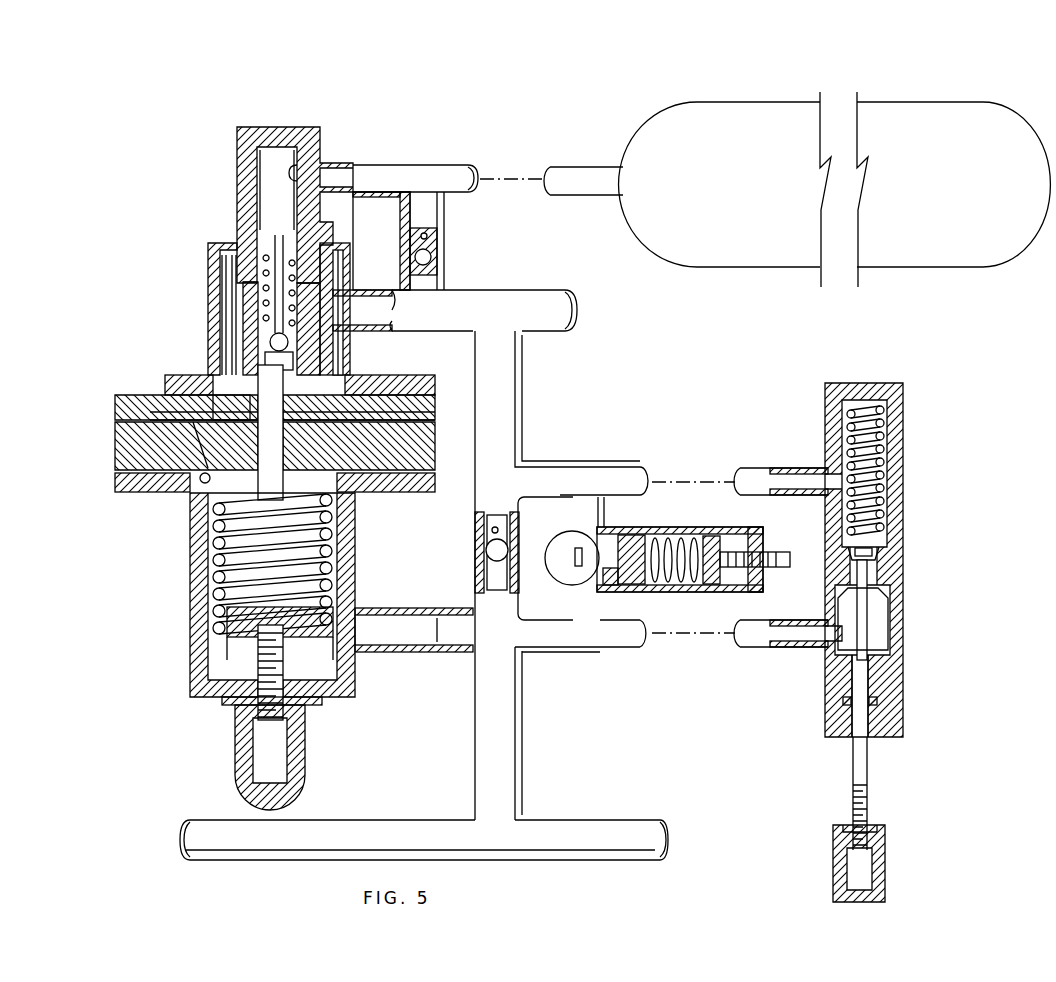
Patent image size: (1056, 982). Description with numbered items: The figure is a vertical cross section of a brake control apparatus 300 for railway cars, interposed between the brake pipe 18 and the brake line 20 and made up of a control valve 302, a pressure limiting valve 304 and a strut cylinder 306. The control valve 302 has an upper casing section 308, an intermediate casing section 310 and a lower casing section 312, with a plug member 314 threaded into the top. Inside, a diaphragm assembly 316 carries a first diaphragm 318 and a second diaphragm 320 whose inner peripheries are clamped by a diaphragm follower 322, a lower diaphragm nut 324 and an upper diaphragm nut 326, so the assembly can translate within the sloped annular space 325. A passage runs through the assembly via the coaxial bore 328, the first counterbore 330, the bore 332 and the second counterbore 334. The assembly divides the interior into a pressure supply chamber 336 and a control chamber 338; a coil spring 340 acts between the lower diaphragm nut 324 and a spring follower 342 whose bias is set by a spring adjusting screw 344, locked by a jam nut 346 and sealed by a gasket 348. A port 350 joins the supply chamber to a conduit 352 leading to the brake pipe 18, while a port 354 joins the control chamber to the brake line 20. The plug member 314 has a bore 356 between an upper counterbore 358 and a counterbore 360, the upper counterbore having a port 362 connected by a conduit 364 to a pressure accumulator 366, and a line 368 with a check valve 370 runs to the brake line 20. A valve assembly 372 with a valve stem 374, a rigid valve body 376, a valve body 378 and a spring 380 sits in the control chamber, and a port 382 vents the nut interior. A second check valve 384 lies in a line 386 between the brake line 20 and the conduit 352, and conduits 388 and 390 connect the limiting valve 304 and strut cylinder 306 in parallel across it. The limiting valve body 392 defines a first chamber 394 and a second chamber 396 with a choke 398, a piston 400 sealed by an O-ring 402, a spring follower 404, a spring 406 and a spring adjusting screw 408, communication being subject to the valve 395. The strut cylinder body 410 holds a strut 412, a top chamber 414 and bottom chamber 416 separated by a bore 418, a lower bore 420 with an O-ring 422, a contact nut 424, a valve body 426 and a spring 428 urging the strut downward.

The brake pipe 18 is at (628, 832).
The brake line 20 is at (544, 302).
The brake control apparatus 300 is at (583, 358).
The control valve 302 is at (206, 149).
The pressure limiting valve 304 is at (657, 612).
The strut cylinder 306 is at (881, 384).
The upper casing section 308 is at (214, 250).
The intermediate casing section 310 is at (116, 412).
The lower casing section 312 is at (205, 690).
The plug member 314 is at (291, 130).
The diaphragm assembly 316 is at (170, 365).
The first diaphragm 318 is at (135, 478).
The second diaphragm 320 is at (168, 392).
The diaphragm follower 322 is at (264, 440).
The lower diaphragm nut 324 is at (195, 512).
The sloped annular space 325 is at (203, 486).
The upper diaphragm nut 326 is at (205, 372).
The coaxial bore 328 is at (347, 508).
The first counterbore 330 is at (348, 387).
The bore 332 is at (293, 368).
The second counterbore 334 is at (266, 332).
The pressure supply chamber 336 is at (325, 680).
The control chamber 338 is at (362, 412).
The coil spring 340 is at (212, 580).
The spring follower 342 is at (210, 642).
The spring adjusting screw 344 is at (262, 660).
The jam nut 346 is at (296, 762).
The gasket 348 is at (302, 700).
The port 350 is at (350, 652).
The conduit 352 is at (474, 683).
The port 354 is at (345, 302).
The bore 356 is at (303, 235).
The upper counterbore 358 is at (322, 206).
The counterbore 360 is at (302, 268).
The port 362 is at (300, 170).
The conduit 364 is at (412, 166).
The pressure accumulator 366 is at (672, 120).
The line 368 is at (440, 212).
The check valve 370 is at (437, 240).
The valve assembly 372 is at (245, 292).
The valve stem 374 is at (251, 320).
The rigid valve body 376 is at (287, 350).
The valve body 378 is at (238, 196).
The spring 380 is at (229, 272).
The port 382 is at (340, 288).
The second check valve 384 is at (486, 551).
The line 386 is at (508, 428).
The conduit 388 is at (628, 470).
The conduit 390 is at (608, 642).
The body 392 is at (757, 530).
The first chamber 394 is at (586, 602).
The valve 395 is at (568, 572).
The second chamber 396 is at (563, 543).
The choke 398 is at (592, 495).
The piston 400 is at (624, 586).
The O-ring 402 is at (630, 534).
The spring follower 404 is at (716, 532).
The spring 406 is at (682, 582).
The spring adjusting screw 408 is at (770, 570).
The body 410 is at (896, 406).
The strut 412 is at (860, 765).
The top chamber 414 is at (886, 418).
The bottom chamber 416 is at (882, 610).
The bore 418 is at (872, 575).
The lower bore 420 is at (872, 668).
The O-ring 422 is at (880, 704).
The contact nut 424 is at (886, 854).
The valve body 426 is at (880, 545).
The spring 428 is at (882, 493).